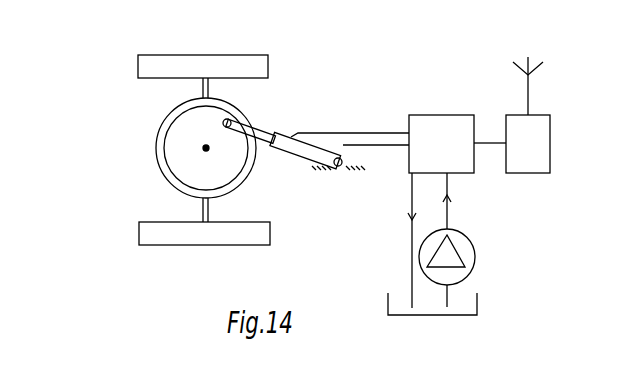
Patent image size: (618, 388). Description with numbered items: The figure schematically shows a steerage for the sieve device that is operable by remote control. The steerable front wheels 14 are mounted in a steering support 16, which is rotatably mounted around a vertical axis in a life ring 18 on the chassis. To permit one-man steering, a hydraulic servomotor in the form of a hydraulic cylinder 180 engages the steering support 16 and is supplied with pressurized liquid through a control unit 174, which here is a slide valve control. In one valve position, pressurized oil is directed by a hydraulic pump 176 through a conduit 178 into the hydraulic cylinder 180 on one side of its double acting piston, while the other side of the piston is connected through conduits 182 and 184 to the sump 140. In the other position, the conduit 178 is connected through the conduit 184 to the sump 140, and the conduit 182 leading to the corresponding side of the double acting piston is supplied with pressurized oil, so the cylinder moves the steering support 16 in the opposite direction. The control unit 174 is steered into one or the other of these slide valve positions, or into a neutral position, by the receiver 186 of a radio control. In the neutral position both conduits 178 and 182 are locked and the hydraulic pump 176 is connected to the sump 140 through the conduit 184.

The front wheels 14 is at (233, 60).
The steering support 16 is at (183, 160).
The life ring 18 is at (152, 142).
The sump 140 is at (425, 305).
The control unit 174 is at (441, 144).
The hydraulic pump 176 is at (467, 250).
The conduit 178 is at (350, 174).
The hydraulic cylinder 180 is at (297, 155).
The conduit 182 is at (360, 132).
The conduit 184 is at (409, 248).
The receiver 186 is at (533, 162).